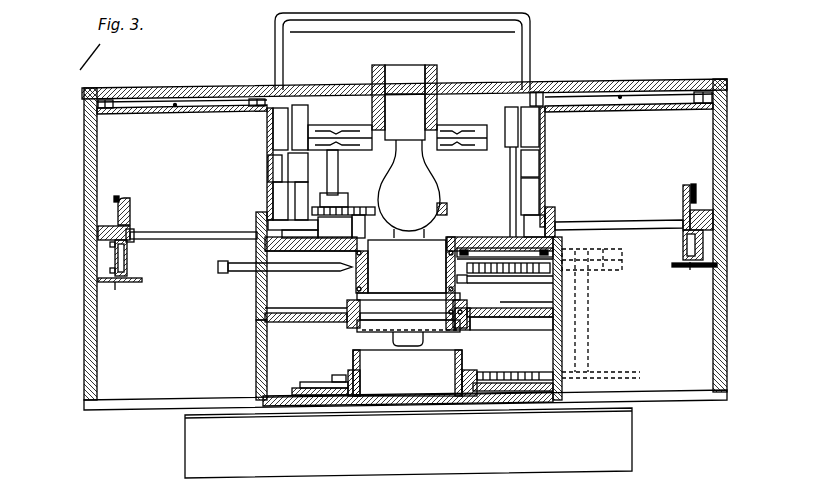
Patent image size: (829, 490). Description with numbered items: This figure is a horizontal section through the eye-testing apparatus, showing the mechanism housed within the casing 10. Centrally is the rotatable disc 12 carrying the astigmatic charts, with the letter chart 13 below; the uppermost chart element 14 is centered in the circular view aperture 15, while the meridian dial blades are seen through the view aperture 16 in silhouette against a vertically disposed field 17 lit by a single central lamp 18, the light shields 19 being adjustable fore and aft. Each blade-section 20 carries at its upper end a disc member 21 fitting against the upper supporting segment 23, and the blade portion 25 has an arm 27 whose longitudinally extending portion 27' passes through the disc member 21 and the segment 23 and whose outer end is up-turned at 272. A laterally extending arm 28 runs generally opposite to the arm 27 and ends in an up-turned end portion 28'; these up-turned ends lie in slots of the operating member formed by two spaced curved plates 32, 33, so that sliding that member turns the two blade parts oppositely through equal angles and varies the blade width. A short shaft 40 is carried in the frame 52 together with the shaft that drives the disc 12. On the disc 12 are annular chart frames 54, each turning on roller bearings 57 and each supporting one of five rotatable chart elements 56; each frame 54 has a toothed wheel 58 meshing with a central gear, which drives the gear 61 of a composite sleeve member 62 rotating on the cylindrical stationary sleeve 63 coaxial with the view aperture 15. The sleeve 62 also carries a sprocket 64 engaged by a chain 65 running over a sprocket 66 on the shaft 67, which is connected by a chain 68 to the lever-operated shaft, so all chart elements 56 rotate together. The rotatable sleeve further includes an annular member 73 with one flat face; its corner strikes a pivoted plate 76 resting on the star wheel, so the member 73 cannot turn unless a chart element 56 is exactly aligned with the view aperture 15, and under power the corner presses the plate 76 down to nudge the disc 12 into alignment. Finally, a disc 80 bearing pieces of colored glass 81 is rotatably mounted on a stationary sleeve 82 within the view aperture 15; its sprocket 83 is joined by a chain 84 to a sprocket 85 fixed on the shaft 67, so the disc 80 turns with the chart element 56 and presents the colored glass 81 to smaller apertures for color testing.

The casing 10 is at (84, 320).
The rotatable disc 12 is at (256, 328).
The letter chart 13 is at (256, 356).
The uppermost chart element 14 is at (462, 330).
The view aperture 15 is at (370, 404).
The view aperture 16 is at (142, 410).
The field 17 is at (207, 113).
The lamp 18 is at (431, 192).
The light shields 19 is at (544, 133).
The blade-section 20 is at (180, 241).
The disc member 21 is at (128, 238).
The upper supporting segment 23 is at (100, 233).
The blade portion 25 is at (625, 221).
The arm 27 is at (143, 211).
The up-turned portion 272 is at (125, 200).
The longitudinally extending portion 27' is at (730, 216).
The laterally extending arm 28 is at (407, 273).
The up-turned end portion 28' is at (410, 286).
The curved plate 32 is at (114, 200).
The curved plate 33 is at (113, 260).
The short shaft 40 is at (338, 176).
The frame 52 is at (470, 130).
The chart frame 54 is at (352, 329).
The rotatable chart element 56 is at (396, 343).
The roller bearings 57 is at (348, 316).
The toothed wheel 58 is at (350, 302).
The gear 61 is at (468, 280).
The composite sleeve member 62 is at (446, 273).
The stationary sleeve 63 is at (372, 257).
The sprocket 64 is at (322, 268).
The chain 65 is at (533, 274).
The sprocket 66 is at (604, 272).
The shaft 67 is at (596, 308).
The chain 68 is at (560, 236).
The annular member 73 is at (360, 248).
The plate 76 is at (478, 246).
The disc 80 is at (511, 404).
The colored glass 81 is at (325, 404).
The stationary sleeve 82 is at (458, 404).
The sprocket 83 is at (342, 404).
The chain 84 is at (536, 371).
The sprocket 85 is at (640, 350).